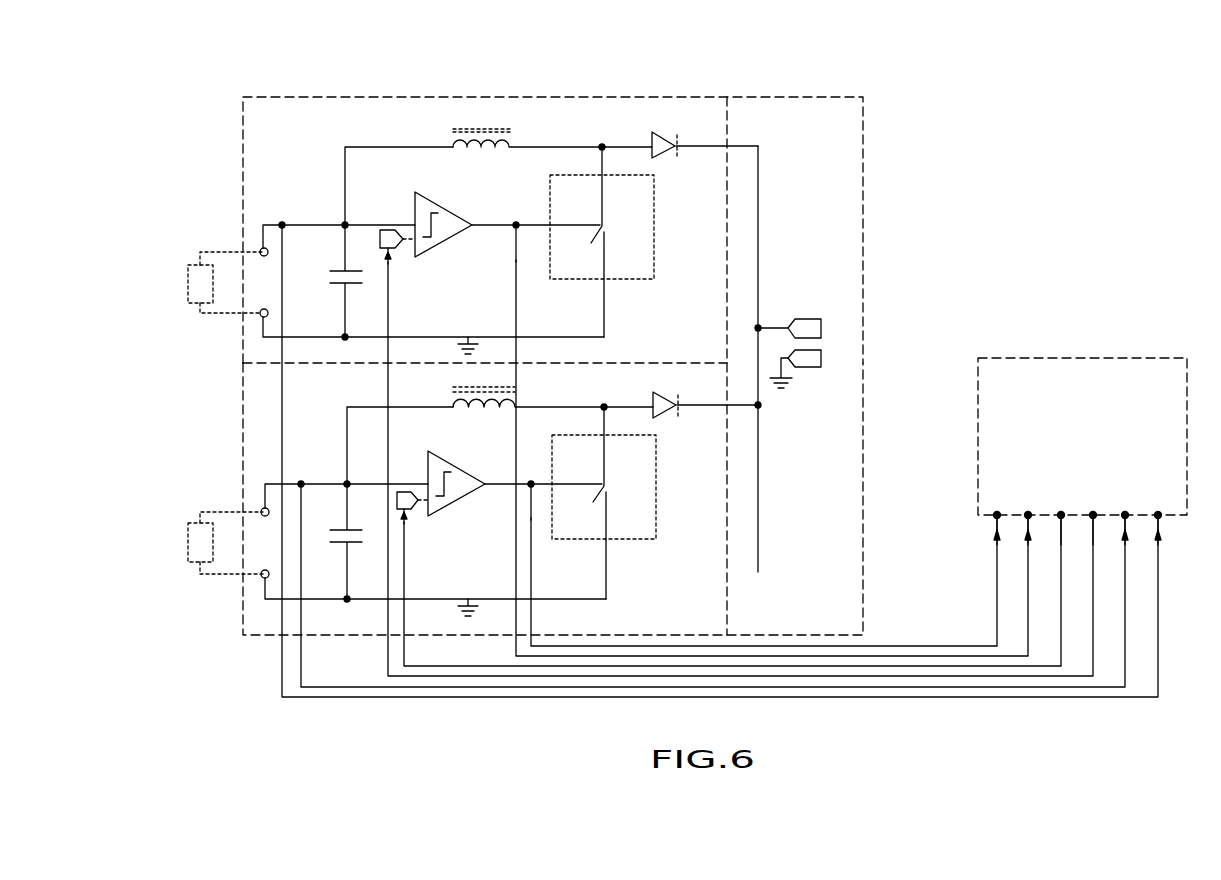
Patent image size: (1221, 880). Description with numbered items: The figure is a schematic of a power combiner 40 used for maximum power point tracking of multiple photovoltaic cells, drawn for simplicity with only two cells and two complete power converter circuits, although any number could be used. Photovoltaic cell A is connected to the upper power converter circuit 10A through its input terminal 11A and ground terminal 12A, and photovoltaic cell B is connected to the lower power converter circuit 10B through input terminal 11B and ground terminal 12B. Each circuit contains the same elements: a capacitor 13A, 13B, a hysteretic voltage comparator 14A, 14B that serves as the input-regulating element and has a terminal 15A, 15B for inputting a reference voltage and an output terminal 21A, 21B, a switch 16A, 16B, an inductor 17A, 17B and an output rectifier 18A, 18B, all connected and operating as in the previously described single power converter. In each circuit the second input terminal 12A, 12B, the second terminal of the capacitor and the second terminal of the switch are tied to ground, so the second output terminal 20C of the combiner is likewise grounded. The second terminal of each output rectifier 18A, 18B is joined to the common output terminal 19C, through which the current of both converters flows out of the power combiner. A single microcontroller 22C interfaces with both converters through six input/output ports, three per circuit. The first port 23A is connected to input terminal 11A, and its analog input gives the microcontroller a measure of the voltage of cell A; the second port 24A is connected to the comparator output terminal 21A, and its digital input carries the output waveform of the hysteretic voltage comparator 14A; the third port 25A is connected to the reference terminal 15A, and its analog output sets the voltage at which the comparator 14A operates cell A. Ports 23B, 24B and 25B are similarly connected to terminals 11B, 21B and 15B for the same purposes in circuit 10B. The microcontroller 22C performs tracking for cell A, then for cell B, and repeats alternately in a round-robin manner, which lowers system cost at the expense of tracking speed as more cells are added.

The power converter circuit 10A is at (303, 118).
The power converter circuit 10B is at (272, 418).
The power combiner 40 is at (781, 95).
The photovoltaic cell A is at (187, 282).
The photovoltaic cell B is at (187, 540).
The input terminal 11A is at (261, 251).
The input terminal 11B is at (262, 510).
The ground terminal 12A is at (261, 316).
The ground terminal 12B is at (262, 577).
The capacitor 13A is at (340, 283).
The capacitor 13B is at (340, 542).
The hysteretic voltage comparator 14A is at (448, 218).
The hysteretic voltage comparator 14B is at (460, 478).
The reference voltage terminal 15A is at (390, 256).
The reference voltage terminal 15B is at (406, 517).
The switch 16A is at (636, 226).
The switch 16B is at (638, 488).
The inductor 17A is at (452, 138).
The inductor 17B is at (455, 402).
The output rectifier 18A is at (652, 142).
The output rectifier 18B is at (654, 402).
The common output terminal 19C is at (818, 328).
The second output terminal 20C is at (818, 358).
The output terminal 21A is at (516, 222).
The output terminal 21B is at (531, 481).
The microcontroller 22C is at (1036, 372).
The first port 23A is at (1158, 511).
The first port 23B is at (1125, 511).
The second port 24A is at (1028, 511).
The second port 24B is at (997, 511).
The third port 25A is at (1093, 511).
The third port 25B is at (1061, 511).